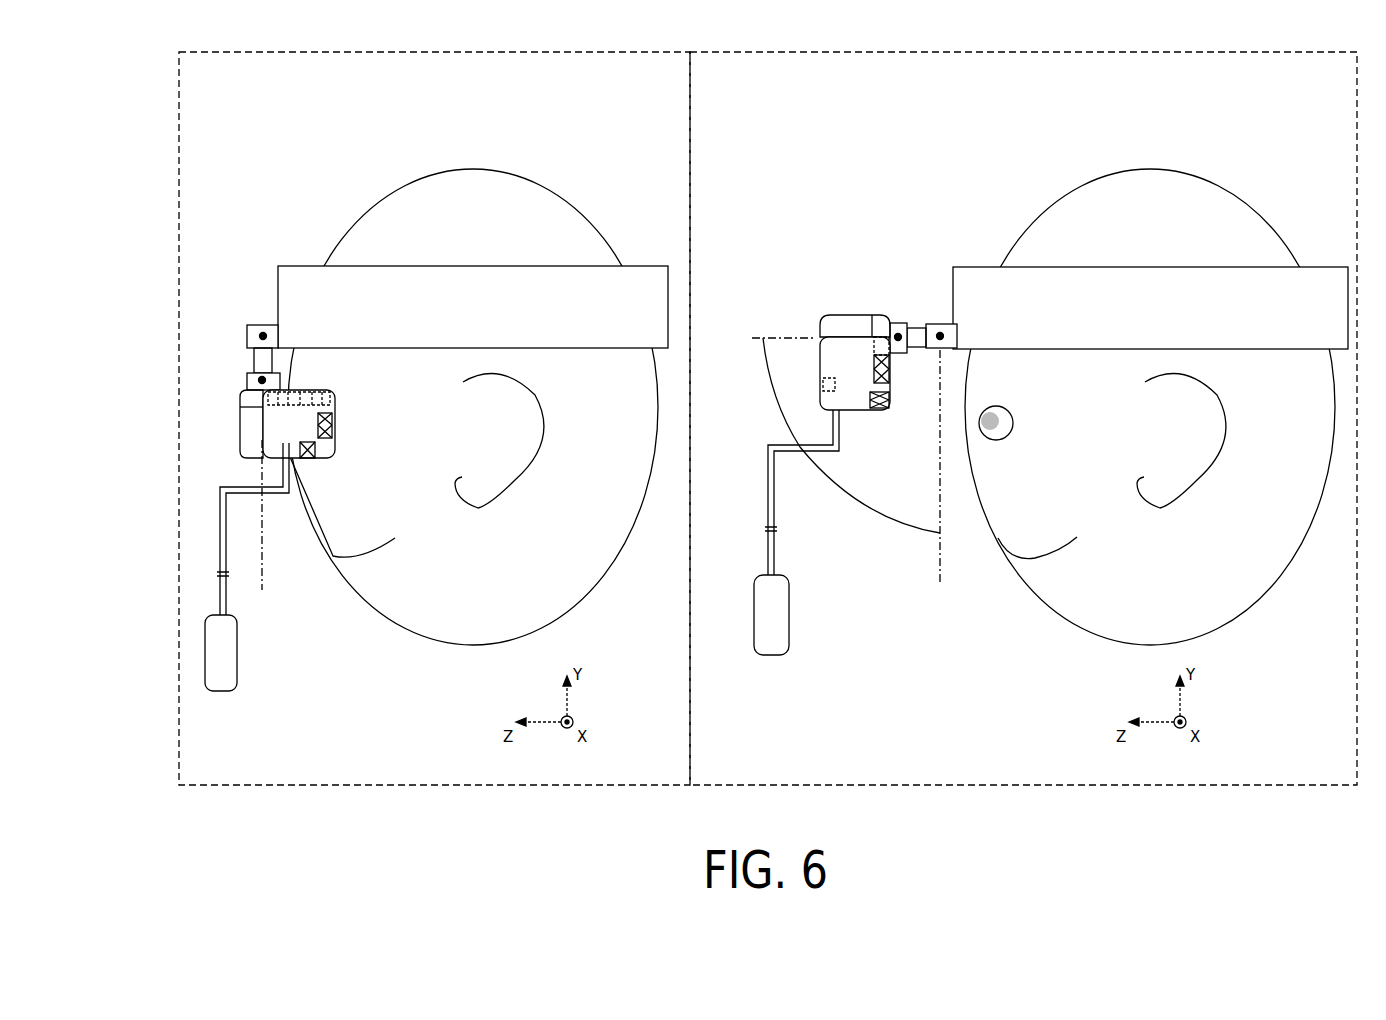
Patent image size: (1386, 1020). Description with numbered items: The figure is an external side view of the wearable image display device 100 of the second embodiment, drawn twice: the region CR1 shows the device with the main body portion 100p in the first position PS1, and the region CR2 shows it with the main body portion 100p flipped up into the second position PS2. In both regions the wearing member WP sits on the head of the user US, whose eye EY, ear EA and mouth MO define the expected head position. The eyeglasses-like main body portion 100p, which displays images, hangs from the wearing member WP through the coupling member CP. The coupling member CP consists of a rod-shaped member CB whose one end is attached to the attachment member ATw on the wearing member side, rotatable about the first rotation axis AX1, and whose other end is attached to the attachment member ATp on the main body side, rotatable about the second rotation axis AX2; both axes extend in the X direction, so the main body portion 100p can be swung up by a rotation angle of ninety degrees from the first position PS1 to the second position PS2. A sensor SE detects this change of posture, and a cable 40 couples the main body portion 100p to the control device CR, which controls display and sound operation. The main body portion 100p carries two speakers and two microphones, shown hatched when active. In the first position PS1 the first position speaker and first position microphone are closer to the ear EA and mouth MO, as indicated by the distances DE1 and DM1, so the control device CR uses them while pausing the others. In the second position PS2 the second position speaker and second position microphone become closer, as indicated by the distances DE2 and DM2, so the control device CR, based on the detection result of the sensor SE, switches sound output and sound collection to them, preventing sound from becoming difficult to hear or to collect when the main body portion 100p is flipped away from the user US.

The region CR1 is at (342, 95).
The region CR2 is at (776, 95).
The image display device 100 is at (665, 461).
The main body portion 100p is at (196, 323).
The wearing member WP is at (298, 275).
The attachment member (first attachment part) ATw is at (268, 324).
The first rotation axis AX1 is at (263, 330).
The coupling member CP is at (242, 349).
The sensor SE is at (618, 343).
The rod-shaped member CB is at (256, 360).
The second rotation axis AX2 is at (248, 383).
The attachment member (second attachment part) ATp is at (258, 391).
The distance DE1 is at (336, 437).
The distance DE2 is at (885, 380).
The distance DM1 is at (347, 558).
The distance DM2 is at (890, 388).
The cable (coupling part) 40 is at (240, 488).
The control device CR is at (220, 692).
The first position PS1 is at (604, 479).
The second position PS2 is at (755, 337).
The mouth MO is at (358, 552).
The ear EA is at (522, 468).
The eye EY is at (1003, 437).
The user US is at (608, 540).